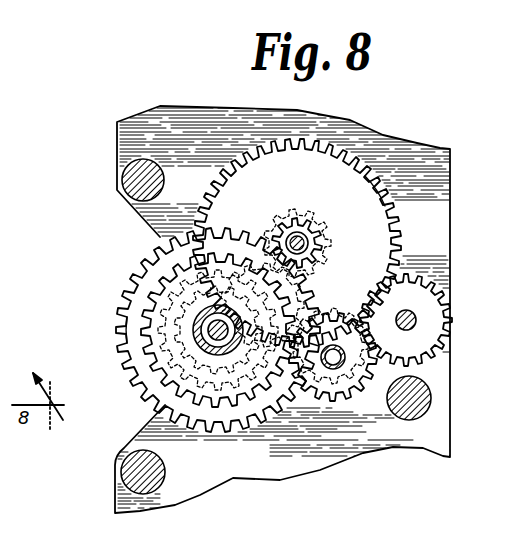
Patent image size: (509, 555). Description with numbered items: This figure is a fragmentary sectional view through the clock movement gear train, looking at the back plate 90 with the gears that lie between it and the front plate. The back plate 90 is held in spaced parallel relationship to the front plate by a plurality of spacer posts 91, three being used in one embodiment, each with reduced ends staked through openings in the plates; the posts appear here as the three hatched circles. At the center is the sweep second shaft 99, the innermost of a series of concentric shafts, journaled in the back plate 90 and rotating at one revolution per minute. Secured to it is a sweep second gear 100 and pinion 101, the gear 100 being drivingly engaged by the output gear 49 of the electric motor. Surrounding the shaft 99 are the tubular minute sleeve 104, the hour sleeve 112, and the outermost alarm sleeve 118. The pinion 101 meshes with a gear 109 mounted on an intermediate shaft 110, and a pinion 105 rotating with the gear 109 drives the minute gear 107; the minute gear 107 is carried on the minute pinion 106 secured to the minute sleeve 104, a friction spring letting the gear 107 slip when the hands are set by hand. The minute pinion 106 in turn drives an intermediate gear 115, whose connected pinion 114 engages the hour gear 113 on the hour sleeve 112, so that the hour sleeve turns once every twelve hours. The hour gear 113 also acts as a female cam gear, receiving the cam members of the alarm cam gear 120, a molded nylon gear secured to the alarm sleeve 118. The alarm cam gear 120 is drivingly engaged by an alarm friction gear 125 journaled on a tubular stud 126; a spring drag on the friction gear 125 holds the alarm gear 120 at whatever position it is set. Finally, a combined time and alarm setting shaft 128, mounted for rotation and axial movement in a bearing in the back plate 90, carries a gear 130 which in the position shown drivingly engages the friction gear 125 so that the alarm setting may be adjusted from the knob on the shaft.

The output gear 49 is at (256, 425).
The back plate 90 is at (266, 114).
The spacer posts 91 is at (136, 169).
The sweep second shaft 99 is at (216, 347).
The sweep second gear 100 is at (160, 256).
The pinion 101 is at (197, 345).
The minute sleeve 104 is at (236, 318).
The pinion 105 is at (292, 214).
The minute pinion 106 is at (215, 330).
The minute gear 107 is at (135, 283).
The gear 109 is at (358, 168).
The intermediate shaft 110 is at (311, 243).
The hour sleeve 112 is at (232, 318).
The hour gear 113 is at (128, 300).
The pinion 114 is at (305, 223).
The intermediate gear 115 is at (360, 212).
The alarm sleeve 118 is at (194, 323).
The alarm cam gear 120 is at (124, 322).
The alarm friction gear 125 is at (366, 397).
The tubular stud 126 is at (335, 366).
The time and alarm setting shaft 128 is at (413, 312).
The gear 130 is at (405, 284).